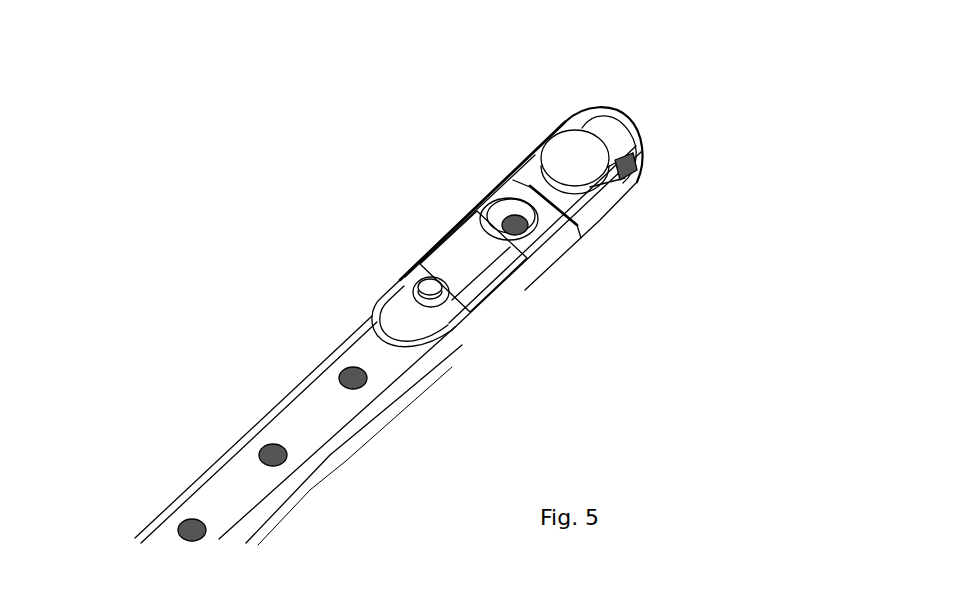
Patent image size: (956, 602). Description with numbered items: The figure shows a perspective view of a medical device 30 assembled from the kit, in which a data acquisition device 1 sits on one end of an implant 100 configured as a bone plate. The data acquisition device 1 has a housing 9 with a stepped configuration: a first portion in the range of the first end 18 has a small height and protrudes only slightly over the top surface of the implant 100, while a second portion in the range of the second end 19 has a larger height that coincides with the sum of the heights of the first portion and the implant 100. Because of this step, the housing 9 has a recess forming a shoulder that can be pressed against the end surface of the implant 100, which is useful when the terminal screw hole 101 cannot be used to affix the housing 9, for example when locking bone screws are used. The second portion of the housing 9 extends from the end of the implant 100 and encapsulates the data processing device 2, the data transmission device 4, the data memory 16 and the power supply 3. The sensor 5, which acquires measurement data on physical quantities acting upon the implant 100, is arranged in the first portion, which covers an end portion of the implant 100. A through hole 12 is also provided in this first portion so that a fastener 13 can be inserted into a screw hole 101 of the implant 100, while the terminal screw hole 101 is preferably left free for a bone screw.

The data acquisition device 1 is at (486, 177).
The data processing device 2 is at (589, 238).
The data transmission device 4 is at (589, 238).
The data memory 16 is at (605, 197).
The power supply 3 is at (570, 153).
The sensor 5 is at (475, 260).
The housing 9 is at (527, 170).
The through hole 12 is at (447, 288).
The fastener 13 is at (425, 290).
The first end 18 is at (390, 327).
The second end 19 is at (617, 125).
The medical device 30 is at (797, 257).
The implant 100 is at (315, 393).
The screw hole 101 is at (517, 223).